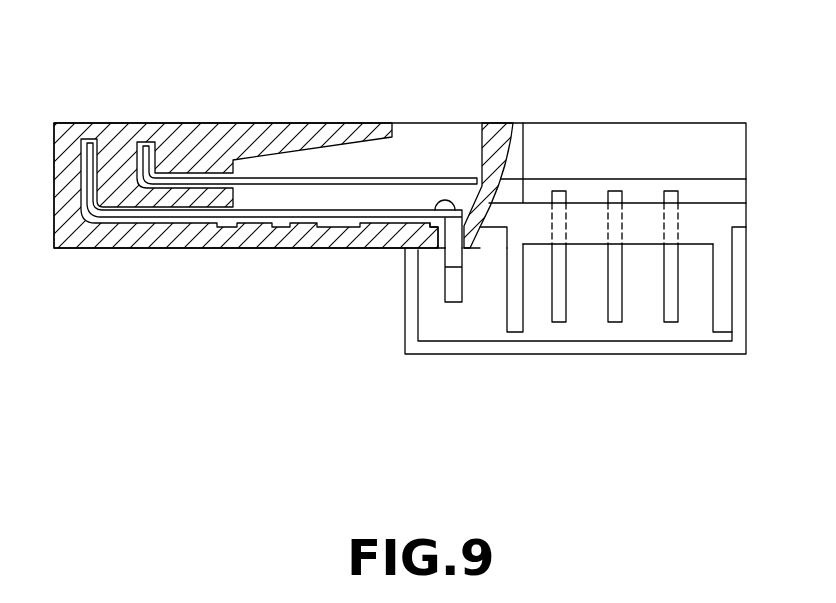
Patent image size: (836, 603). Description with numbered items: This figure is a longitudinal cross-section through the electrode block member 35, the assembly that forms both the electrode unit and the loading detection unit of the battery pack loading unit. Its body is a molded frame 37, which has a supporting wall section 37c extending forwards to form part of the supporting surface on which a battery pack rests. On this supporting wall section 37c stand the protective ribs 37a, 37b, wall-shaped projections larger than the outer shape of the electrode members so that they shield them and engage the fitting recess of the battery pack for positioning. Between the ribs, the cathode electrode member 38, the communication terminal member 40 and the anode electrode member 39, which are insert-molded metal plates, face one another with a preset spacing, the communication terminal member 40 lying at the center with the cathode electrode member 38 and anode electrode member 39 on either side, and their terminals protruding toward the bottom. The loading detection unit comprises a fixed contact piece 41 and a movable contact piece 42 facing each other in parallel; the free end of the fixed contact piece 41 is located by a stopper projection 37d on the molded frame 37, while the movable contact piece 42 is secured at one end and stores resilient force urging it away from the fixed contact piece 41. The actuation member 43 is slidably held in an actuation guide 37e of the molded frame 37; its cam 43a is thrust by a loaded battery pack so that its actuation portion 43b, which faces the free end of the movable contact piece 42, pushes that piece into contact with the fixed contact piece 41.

The electrode block member 35 is at (770, 38).
The molded frame 37 is at (285, 133).
The protective rib 37a is at (512, 310).
The protective rib 37b is at (722, 303).
The supporting wall section 37c is at (637, 327).
The stopper projection 37d is at (464, 198).
The actuation guide 37e is at (423, 228).
The cathode electrode member 38 is at (558, 312).
The anode electrode member 39 is at (670, 307).
The communication terminal member 40 is at (617, 312).
The fixed contact piece 41 is at (270, 182).
The movable contact piece 42 is at (289, 224).
The actuation member 43 is at (451, 296).
The cam 43a is at (446, 262).
The actuation portion 43b is at (444, 240).